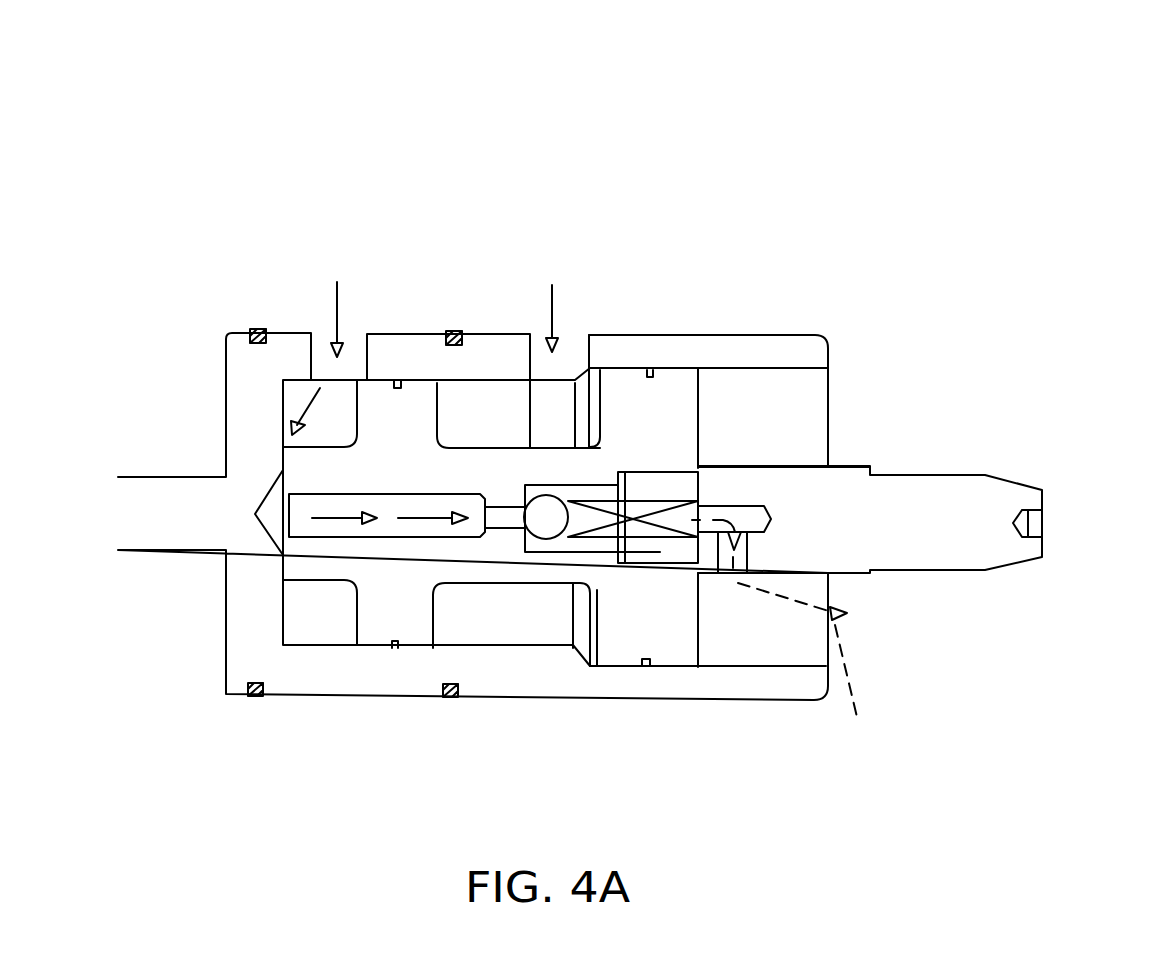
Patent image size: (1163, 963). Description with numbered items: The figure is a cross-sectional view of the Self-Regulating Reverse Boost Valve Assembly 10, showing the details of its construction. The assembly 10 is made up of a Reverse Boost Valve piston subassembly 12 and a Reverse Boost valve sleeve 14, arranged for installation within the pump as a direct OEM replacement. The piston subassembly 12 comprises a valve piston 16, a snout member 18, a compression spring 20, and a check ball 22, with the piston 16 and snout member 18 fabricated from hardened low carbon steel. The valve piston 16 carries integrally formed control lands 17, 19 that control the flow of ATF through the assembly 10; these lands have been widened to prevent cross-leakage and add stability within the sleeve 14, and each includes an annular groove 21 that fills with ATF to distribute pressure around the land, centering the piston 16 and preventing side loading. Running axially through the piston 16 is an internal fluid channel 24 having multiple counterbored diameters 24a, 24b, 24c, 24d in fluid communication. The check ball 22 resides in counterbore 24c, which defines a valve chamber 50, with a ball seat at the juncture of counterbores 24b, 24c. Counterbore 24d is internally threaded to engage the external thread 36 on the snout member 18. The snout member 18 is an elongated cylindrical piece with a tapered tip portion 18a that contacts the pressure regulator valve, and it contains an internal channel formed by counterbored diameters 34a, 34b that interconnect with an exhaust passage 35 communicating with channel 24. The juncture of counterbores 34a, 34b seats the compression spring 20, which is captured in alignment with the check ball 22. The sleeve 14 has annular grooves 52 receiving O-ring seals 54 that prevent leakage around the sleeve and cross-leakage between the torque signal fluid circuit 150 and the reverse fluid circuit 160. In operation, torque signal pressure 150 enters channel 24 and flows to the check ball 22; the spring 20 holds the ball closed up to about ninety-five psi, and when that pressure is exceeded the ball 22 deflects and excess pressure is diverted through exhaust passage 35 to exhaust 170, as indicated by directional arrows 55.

The Self-Regulating Reverse Boost Valve Assembly 10 is at (638, 210).
The Reverse Boost Valve piston subassembly 12 is at (744, 460).
The Reverse Boost valve sleeve 14 is at (765, 333).
The valve piston 16 is at (406, 588).
The control land 17 is at (382, 650).
The snout member 18 is at (913, 538).
The tapered tip portion 18a is at (1005, 494).
The control land 19 is at (621, 668).
The compression spring 20 is at (662, 537).
The annular groove 21 is at (397, 380).
The check ball 22 is at (547, 540).
The internal fluid channel 24 is at (288, 513).
The counterbored diameter 24a is at (336, 545).
The counterbored diameter 24b is at (505, 507).
The counterbored diameter 24c is at (585, 483).
The counterbored diameter 24d is at (650, 563).
The counterbored diameter 34a is at (688, 538).
The counterbored diameter 34b is at (743, 504).
The exhaust passage 35 is at (745, 550).
The external thread 36 is at (700, 452).
The valve chamber 50 is at (533, 485).
The annular groove 52 is at (250, 683).
The O-ring seal 54 is at (257, 330).
The directional arrows 55 is at (290, 428).
The Torque Signal fluid circuit 150 is at (334, 196).
The Reverse fluid circuit 160 is at (554, 230).
The exhaust 170 is at (919, 628).